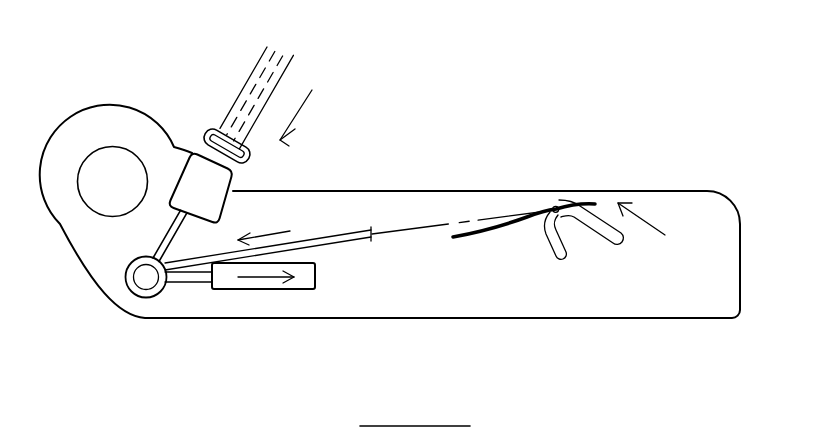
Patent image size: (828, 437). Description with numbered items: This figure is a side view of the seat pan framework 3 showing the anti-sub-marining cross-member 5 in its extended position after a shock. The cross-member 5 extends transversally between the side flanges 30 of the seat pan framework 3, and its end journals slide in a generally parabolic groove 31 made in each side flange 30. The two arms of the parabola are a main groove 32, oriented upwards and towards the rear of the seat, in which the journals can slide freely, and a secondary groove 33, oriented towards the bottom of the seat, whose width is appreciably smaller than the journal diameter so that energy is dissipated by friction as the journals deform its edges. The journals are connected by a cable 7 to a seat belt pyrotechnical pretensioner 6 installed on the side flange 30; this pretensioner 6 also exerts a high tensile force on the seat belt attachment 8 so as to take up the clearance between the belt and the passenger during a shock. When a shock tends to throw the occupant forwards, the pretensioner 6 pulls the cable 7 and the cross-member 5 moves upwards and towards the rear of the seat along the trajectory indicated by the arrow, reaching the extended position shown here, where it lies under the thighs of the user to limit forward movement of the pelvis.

The seat pan framework 3 is at (411, 166).
The anti-sub-marining cross-member 5 is at (483, 223).
The seat belt pyrotechnical pretensioner 6 is at (237, 289).
The cable 7 is at (347, 240).
The seat belt attachment 8 is at (186, 182).
The side flange 30 is at (667, 190).
The groove 31 is at (556, 203).
The main groove 32 is at (602, 226).
The secondary groove 33 is at (553, 238).